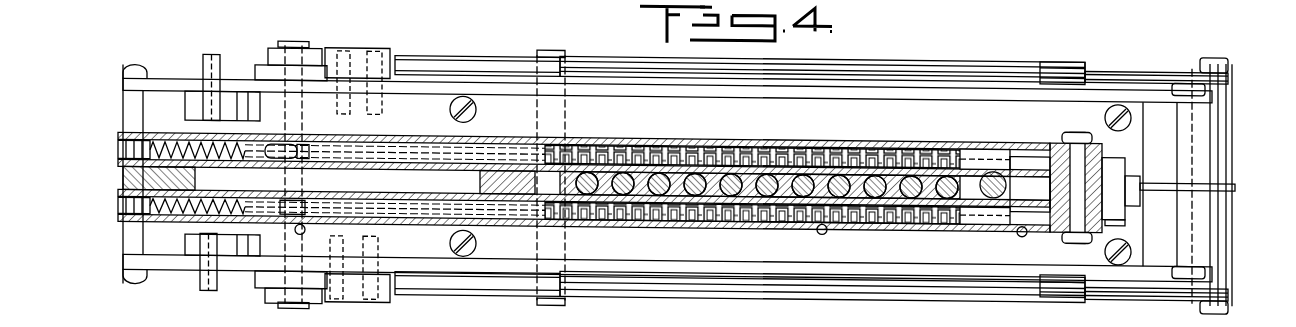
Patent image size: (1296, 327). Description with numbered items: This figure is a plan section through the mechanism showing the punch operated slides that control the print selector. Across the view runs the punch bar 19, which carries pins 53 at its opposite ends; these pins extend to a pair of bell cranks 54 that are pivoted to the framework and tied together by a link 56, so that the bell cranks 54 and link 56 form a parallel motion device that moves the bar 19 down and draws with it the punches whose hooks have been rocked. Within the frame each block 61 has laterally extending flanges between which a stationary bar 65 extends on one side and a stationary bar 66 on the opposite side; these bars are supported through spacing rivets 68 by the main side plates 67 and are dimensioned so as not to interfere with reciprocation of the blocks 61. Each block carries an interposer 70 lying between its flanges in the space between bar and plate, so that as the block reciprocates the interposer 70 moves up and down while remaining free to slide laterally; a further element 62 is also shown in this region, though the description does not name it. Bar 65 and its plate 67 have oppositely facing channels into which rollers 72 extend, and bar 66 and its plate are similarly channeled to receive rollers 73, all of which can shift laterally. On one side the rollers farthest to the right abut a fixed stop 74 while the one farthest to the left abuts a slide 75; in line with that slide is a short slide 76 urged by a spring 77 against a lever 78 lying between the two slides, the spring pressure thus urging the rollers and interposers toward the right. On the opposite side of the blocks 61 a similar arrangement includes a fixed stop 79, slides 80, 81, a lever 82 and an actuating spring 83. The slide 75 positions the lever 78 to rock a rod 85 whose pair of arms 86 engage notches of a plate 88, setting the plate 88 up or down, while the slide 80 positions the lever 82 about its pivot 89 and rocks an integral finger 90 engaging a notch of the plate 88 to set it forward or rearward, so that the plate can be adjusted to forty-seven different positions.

The punch bar 19 is at (1238, 174).
The pins 53 is at (1230, 229).
The bell cranks 54 is at (480, 57).
The link 56 is at (918, 54).
The block 61 is at (960, 149).
The ball 62 is at (998, 165).
The stationary bar 65 is at (905, 205).
The stationary bar 66 is at (912, 150).
The main side plates 67 is at (1068, 122).
The spacing rivets 68 is at (822, 220).
The interposer 70 is at (770, 140).
The rollers 72 is at (755, 216).
The rollers 73 is at (625, 143).
The fixed stop 74 is at (1112, 213).
The slide 75 is at (490, 205).
The short slide 76 is at (258, 195).
The spring 77 is at (173, 220).
The lever 78 is at (305, 199).
The fixed stop 79 is at (1112, 145).
The slide 80 is at (482, 144).
The slide 81 is at (257, 140).
The lever 82 is at (300, 140).
The actuating spring 83 is at (163, 136).
The rod 85 is at (293, 306).
The arms 86 is at (255, 63).
The plate 88 is at (215, 98).
The pivot 89 is at (312, 237).
The finger 90 is at (213, 240).